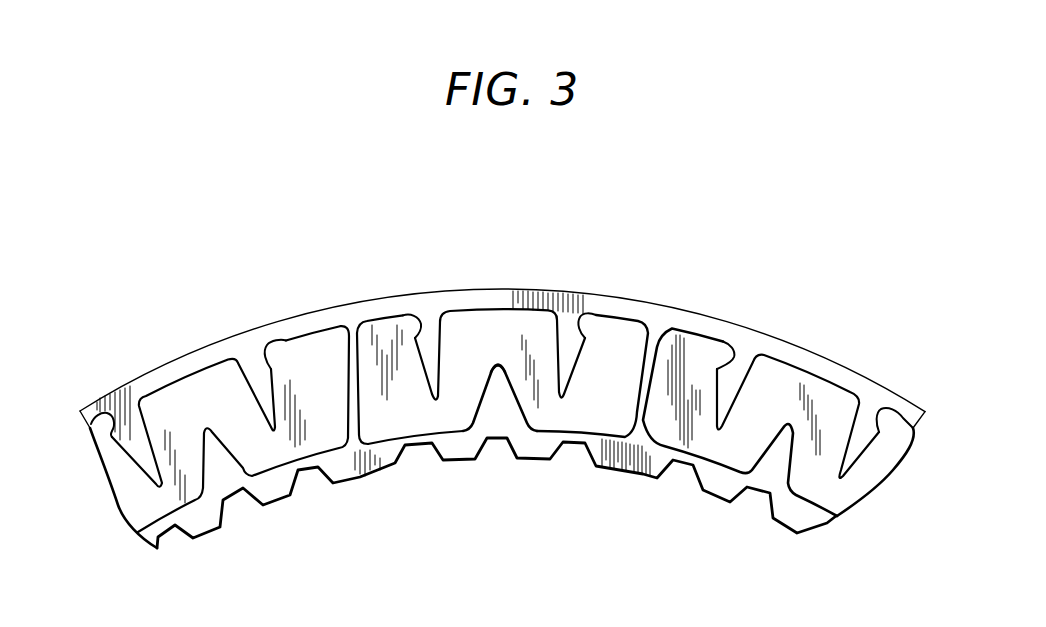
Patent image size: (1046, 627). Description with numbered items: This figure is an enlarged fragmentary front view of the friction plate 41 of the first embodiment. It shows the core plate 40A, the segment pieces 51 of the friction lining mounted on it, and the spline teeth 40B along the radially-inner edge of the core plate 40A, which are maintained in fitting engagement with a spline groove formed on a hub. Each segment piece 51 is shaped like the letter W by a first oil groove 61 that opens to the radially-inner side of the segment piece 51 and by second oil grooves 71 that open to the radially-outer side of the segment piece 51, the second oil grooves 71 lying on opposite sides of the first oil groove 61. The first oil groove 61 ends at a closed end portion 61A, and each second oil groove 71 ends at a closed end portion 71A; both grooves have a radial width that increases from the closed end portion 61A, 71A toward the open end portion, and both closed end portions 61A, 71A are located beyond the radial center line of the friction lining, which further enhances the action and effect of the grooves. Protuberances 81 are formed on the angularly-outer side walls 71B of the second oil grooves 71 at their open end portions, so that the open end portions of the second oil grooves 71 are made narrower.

The friction plate 41 is at (822, 228).
The core plate 40A is at (742, 338).
The spline teeth 40B is at (720, 483).
The segment piece 51 is at (617, 347).
The first oil groove 61 is at (500, 403).
The closed end portion 61A is at (500, 358).
The second oil groove 71 is at (427, 327).
The closed end portion 71A is at (433, 380).
The angularly-outer side wall 71B is at (417, 382).
The protuberance 81 is at (410, 323).